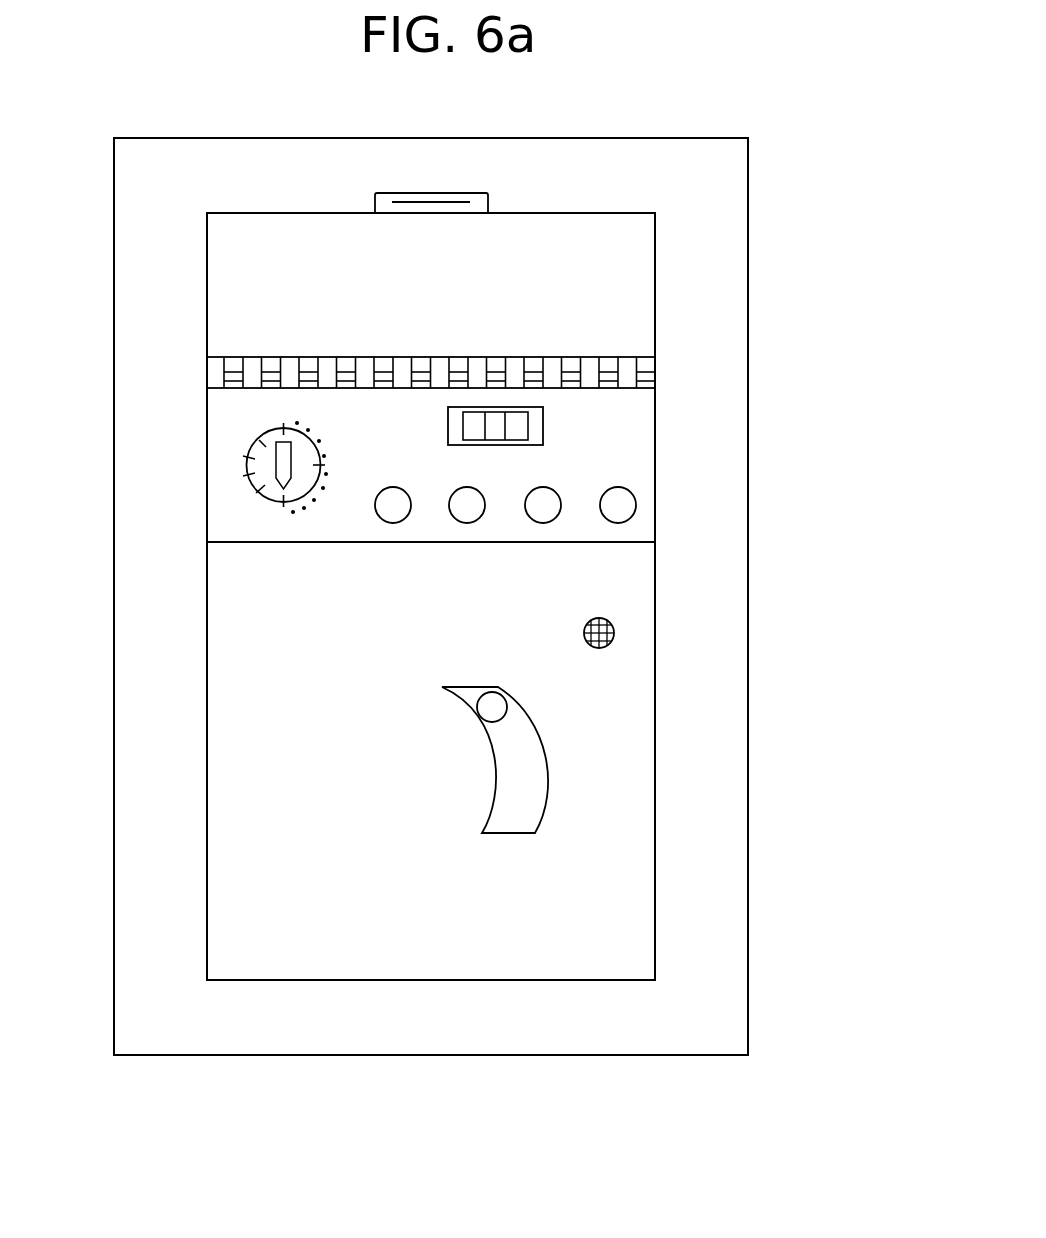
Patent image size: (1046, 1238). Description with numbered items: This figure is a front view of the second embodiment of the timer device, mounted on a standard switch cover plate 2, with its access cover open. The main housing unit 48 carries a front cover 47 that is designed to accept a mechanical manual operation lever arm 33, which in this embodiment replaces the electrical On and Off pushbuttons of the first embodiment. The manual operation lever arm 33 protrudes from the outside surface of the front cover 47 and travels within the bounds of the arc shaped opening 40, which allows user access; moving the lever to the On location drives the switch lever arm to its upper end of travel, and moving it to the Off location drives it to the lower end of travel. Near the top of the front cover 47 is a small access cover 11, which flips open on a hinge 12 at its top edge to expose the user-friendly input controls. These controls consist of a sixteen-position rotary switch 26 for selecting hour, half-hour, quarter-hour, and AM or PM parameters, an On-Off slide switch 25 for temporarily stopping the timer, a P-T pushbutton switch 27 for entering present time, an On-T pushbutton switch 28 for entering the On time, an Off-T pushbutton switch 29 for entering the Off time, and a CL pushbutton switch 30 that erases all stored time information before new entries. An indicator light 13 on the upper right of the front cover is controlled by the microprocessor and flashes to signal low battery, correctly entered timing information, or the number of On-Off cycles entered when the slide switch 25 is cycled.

The switch cover plate 2 is at (523, 1057).
The access cover 11 is at (636, 292).
The hinge 12 is at (657, 367).
The indicator light 13 is at (614, 628).
The On-Off slide switch 25 is at (535, 413).
The 16 position rotary switch 26 is at (247, 467).
The P-T pushbutton switch 27 is at (381, 520).
The On-T pushbutton switch 28 is at (456, 520).
The Off-T pushbutton switch 29 is at (531, 520).
The CL pushbutton switch 30 is at (607, 520).
The manual operation lever arm 33 is at (485, 725).
The arc shaped opening 40 is at (511, 761).
The front cover 47 is at (635, 942).
The main housing unit 48 is at (180, 860).